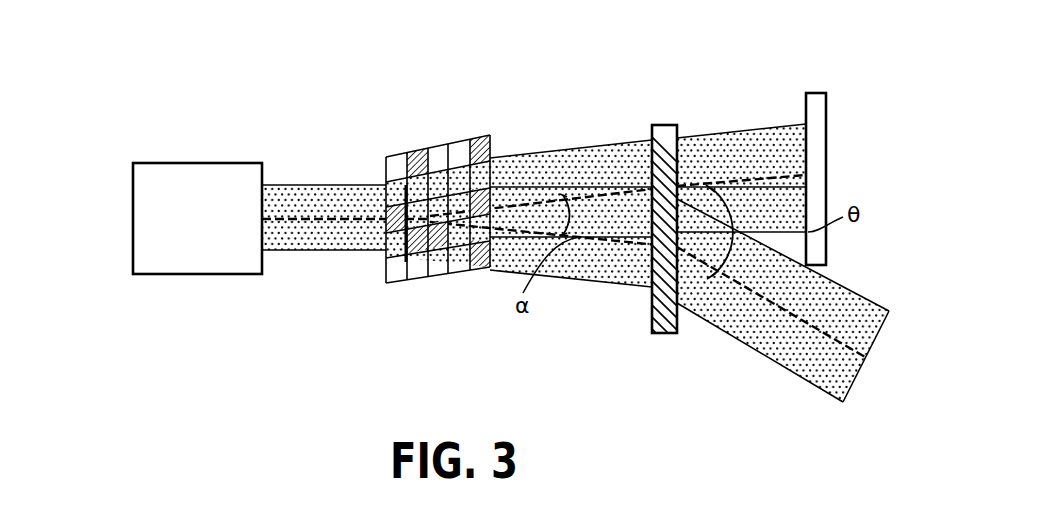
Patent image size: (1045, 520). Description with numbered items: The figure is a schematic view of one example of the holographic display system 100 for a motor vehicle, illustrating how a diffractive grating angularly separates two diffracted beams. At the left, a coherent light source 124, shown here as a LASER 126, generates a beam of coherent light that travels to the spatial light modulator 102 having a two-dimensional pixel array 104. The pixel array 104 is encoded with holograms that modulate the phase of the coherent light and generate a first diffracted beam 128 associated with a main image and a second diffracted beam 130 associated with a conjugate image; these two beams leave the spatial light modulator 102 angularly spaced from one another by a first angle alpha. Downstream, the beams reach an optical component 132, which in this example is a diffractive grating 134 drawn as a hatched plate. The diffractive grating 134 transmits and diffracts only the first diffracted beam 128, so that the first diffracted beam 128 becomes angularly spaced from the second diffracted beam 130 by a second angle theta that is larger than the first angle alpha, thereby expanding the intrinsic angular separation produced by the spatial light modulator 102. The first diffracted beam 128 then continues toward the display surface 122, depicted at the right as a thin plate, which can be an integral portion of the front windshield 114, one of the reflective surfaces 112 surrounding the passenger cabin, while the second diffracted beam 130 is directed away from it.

The holographic display system 100 is at (106, 286).
The spatial light modulator 102 is at (398, 191).
The two-dimensional pixel array 104 is at (385, 170).
The reflective surfaces 112 is at (831, 150).
The front windshield 114 is at (831, 150).
The display surface 122 is at (805, 108).
The coherent light source 124 is at (164, 204).
The LASER 126 is at (133, 185).
The first diffracted beam 128 is at (592, 150).
The second diffracted beam 130 is at (669, 252).
The optical component 132 is at (666, 221).
The diffractive grating 134 is at (662, 124).